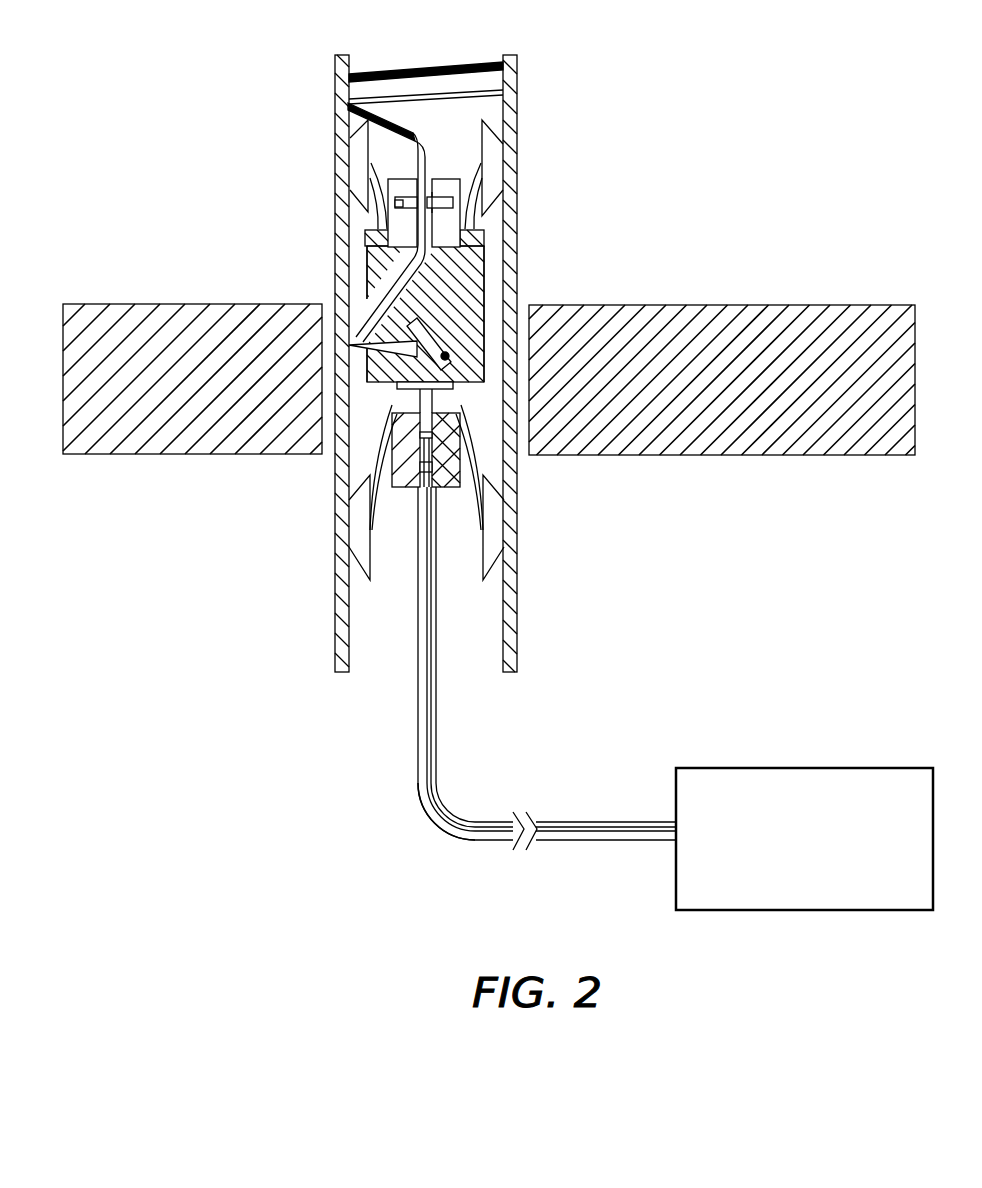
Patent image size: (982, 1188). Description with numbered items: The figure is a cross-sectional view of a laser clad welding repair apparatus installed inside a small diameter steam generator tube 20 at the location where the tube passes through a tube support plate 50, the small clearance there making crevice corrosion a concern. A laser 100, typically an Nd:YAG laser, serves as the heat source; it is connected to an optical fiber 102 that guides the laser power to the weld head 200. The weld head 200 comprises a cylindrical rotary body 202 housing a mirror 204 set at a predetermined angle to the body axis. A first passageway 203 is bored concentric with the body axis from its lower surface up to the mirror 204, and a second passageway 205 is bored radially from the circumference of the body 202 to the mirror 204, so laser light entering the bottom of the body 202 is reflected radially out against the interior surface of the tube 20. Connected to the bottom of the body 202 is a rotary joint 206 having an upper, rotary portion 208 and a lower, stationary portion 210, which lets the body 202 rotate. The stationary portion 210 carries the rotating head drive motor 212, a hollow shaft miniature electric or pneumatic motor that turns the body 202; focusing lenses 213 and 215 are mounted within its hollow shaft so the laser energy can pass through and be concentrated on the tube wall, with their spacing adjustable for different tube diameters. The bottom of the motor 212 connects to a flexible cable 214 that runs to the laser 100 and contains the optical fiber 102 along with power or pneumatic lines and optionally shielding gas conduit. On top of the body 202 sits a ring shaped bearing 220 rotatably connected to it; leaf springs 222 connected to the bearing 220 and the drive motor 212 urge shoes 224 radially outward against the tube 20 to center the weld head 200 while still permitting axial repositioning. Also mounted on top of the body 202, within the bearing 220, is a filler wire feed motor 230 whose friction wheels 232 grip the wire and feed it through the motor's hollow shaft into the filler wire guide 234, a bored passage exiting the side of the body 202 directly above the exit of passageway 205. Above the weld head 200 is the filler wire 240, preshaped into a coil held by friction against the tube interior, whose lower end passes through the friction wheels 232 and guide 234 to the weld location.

The steam generator tube 20 is at (374, 375).
The tube support plate 50 is at (489, 405).
The laser 100 is at (804, 816).
The optical fiber 102 is at (505, 668).
The weld head 200 is at (372, 282).
The cylindrical rotary body 202 is at (535, 306).
The first passageway 203 is at (313, 296).
The mirror 204 is at (496, 317).
The second passageway 205 is at (334, 315).
The rotary joint 206 is at (492, 450).
The upper, rotary portion 208 is at (356, 456).
The lower, stationary portion 210 is at (328, 497).
The rotating head drive motor 212 is at (537, 527).
The focusing lens 213 is at (524, 486).
The flexible cable 214 is at (466, 839).
The focusing lens 215 is at (472, 572).
The ring shaped bearing 220 is at (523, 221).
The leaf springs 222 is at (525, 192).
The shoes 224 is at (534, 154).
The filler wire feed motor 230 is at (360, 171).
The friction wheels 232 is at (356, 169).
The filler wire guide 234 is at (331, 181).
The filler wire 240 is at (441, 176).